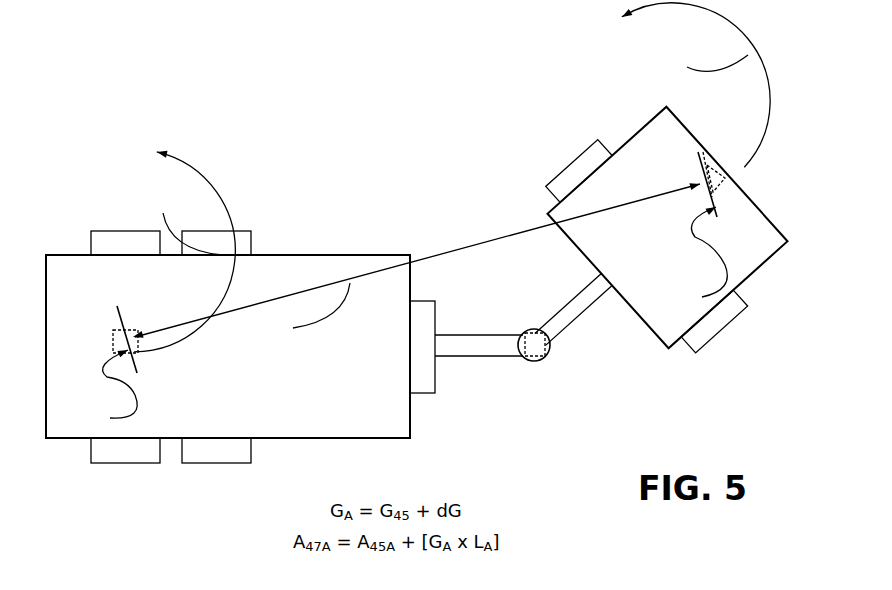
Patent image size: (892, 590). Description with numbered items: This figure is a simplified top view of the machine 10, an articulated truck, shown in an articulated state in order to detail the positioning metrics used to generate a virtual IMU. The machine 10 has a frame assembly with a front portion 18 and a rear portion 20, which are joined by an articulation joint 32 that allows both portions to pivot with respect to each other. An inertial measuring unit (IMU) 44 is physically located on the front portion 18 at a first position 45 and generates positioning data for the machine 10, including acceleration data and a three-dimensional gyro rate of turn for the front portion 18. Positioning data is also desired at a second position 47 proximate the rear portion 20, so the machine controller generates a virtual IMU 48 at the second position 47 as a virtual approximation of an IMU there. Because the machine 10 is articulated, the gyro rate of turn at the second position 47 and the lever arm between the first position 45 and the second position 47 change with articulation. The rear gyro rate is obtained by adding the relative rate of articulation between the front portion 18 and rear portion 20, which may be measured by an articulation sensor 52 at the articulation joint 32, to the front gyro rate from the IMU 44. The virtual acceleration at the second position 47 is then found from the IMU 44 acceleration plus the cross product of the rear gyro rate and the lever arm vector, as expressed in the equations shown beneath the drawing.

The machine 10 is at (418, 153).
The front portion 18 is at (647, 338).
The rear portion 20 is at (458, 390).
The articulation joint 32 is at (521, 337).
The inertial measuring unit 44 is at (708, 134).
The first position 45 is at (730, 187).
The second position 47 is at (113, 352).
The virtual IMU 48 is at (113, 340).
The articulation sensor 52 is at (531, 330).